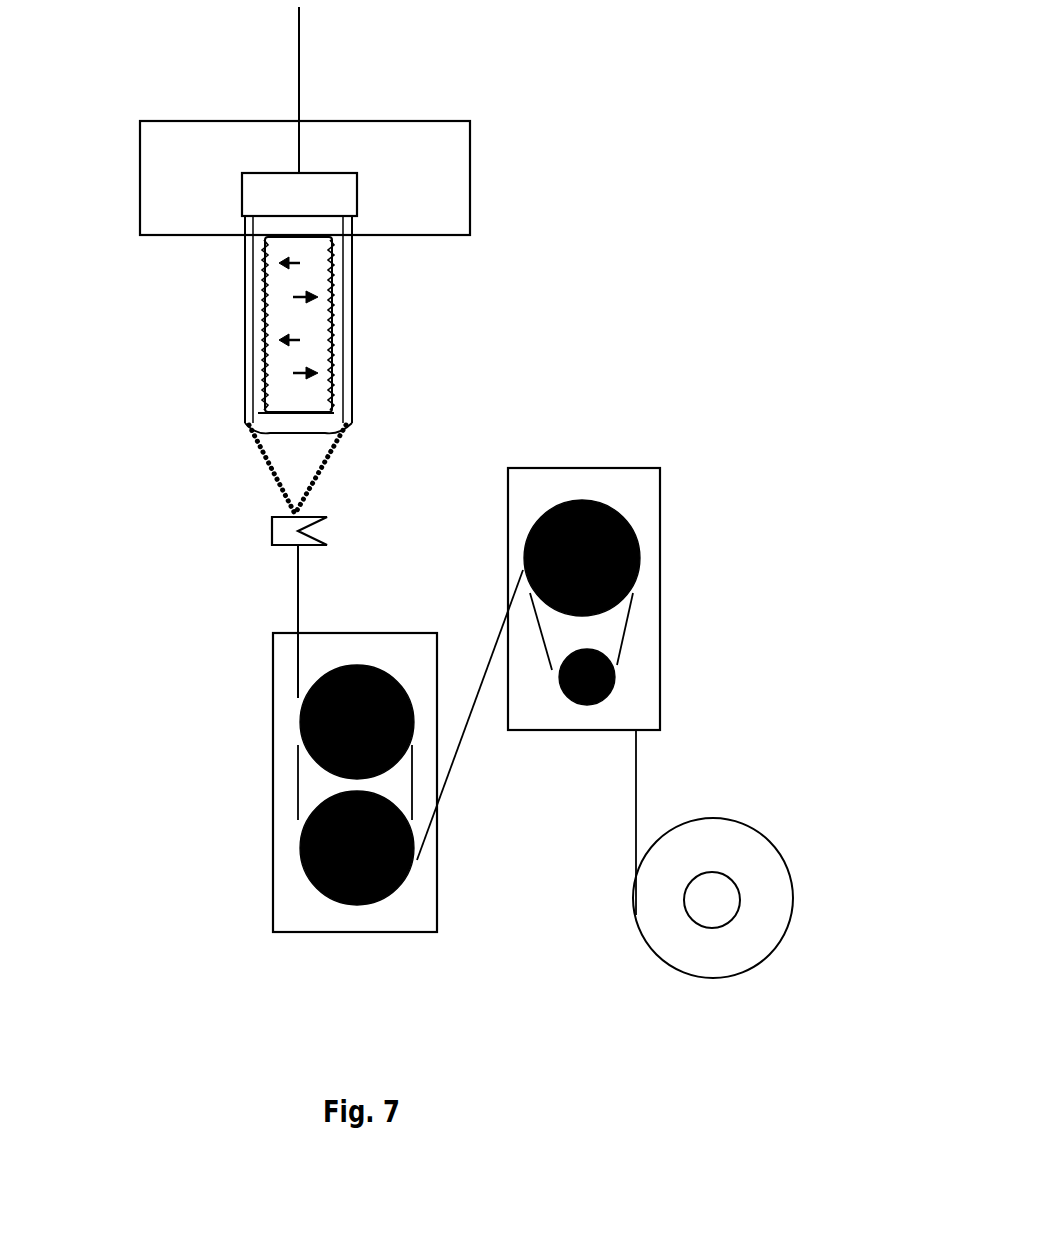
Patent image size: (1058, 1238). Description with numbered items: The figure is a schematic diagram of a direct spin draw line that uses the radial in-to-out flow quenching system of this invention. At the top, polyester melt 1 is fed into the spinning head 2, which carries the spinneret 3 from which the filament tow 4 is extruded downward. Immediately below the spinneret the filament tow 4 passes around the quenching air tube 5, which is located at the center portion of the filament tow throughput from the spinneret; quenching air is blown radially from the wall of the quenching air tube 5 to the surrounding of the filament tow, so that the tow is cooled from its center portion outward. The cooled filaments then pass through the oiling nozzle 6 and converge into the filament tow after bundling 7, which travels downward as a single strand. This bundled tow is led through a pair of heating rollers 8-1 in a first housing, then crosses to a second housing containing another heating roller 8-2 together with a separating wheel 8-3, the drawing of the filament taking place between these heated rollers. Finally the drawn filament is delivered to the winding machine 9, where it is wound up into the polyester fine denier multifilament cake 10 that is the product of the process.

The polyester melt 1 is at (312, 8).
The spinning head 2 is at (470, 145).
The spinneret 3 is at (265, 202).
The filament tow 4 is at (350, 345).
The quenching air tube 5 is at (265, 375).
The oiling nozzle 6 is at (327, 531).
The filament tow after bundling 7 is at (298, 592).
The heating roller 8-1 is at (297, 850).
The heating roller 8-2 is at (625, 522).
The separating wheel 8-3 is at (617, 667).
The winding machine 9 is at (715, 908).
The polyester fine denier multifilament cake 10 is at (740, 848).